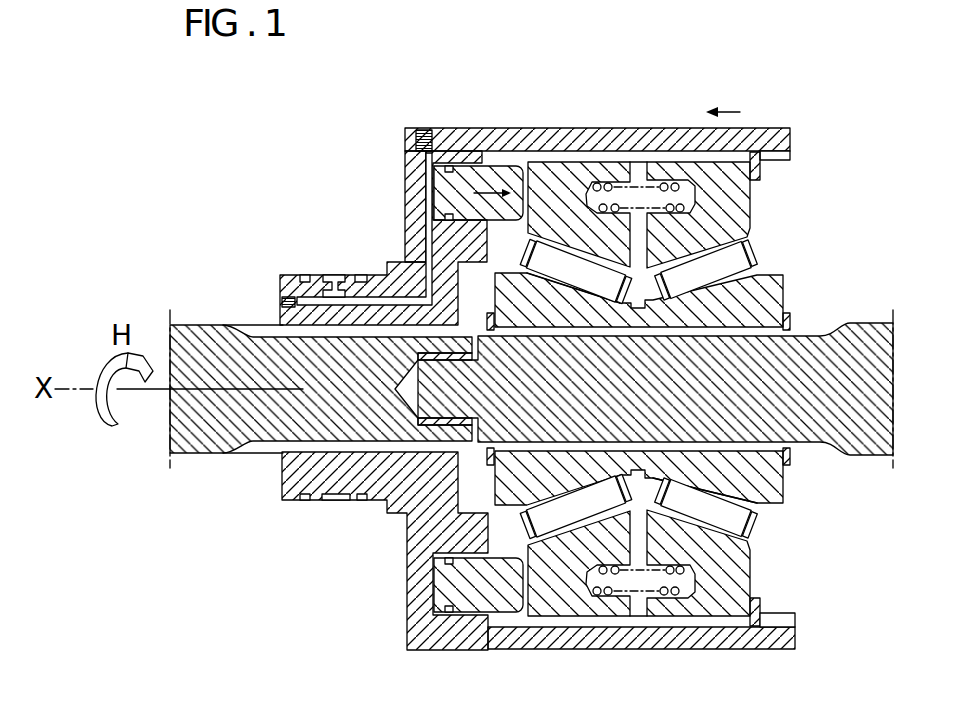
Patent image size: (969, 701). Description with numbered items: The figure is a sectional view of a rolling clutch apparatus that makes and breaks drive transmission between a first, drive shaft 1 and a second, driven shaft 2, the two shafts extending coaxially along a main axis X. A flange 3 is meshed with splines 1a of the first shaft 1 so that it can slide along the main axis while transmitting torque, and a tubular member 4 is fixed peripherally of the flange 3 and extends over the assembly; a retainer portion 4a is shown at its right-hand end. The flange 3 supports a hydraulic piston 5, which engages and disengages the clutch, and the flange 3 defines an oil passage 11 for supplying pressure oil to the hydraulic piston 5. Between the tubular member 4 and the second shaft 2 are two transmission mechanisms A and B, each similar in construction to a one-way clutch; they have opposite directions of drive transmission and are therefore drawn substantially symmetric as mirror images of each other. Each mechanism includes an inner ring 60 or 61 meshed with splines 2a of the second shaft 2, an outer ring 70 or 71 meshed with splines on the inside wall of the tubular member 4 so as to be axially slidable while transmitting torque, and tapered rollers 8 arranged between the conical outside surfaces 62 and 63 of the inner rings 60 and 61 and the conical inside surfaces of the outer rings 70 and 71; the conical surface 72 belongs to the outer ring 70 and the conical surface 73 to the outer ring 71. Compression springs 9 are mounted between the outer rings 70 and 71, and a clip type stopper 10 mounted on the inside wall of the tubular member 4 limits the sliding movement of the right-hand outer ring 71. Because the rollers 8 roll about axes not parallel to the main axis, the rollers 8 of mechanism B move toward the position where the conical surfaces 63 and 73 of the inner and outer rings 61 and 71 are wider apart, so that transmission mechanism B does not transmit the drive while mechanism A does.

The first shaft 1 is at (205, 452).
The splines 1a is at (250, 322).
The second shaft 2 is at (875, 455).
The splines 2a is at (822, 320).
The flange 3 is at (405, 193).
The tubular member 4 is at (766, 128).
The retainer ring 4a is at (772, 170).
The hydraulic piston 5 is at (472, 172).
The tapered rollers 8 is at (737, 267).
The compression springs 9 is at (668, 183).
The clip type stopper 10 is at (762, 604).
The oil passage 11 is at (427, 263).
The inner ring 60 is at (413, 530).
The inner ring 61 is at (788, 487).
The conical outside surface 62 is at (547, 272).
The conical outside surface 63 is at (714, 492).
The outer ring 70 is at (597, 163).
The outer ring 71 is at (752, 202).
The cam surface 72 is at (598, 280).
The conical surface 73 is at (724, 526).
The transmission mechanism A is at (516, 250).
The transmission mechanism B is at (762, 244).